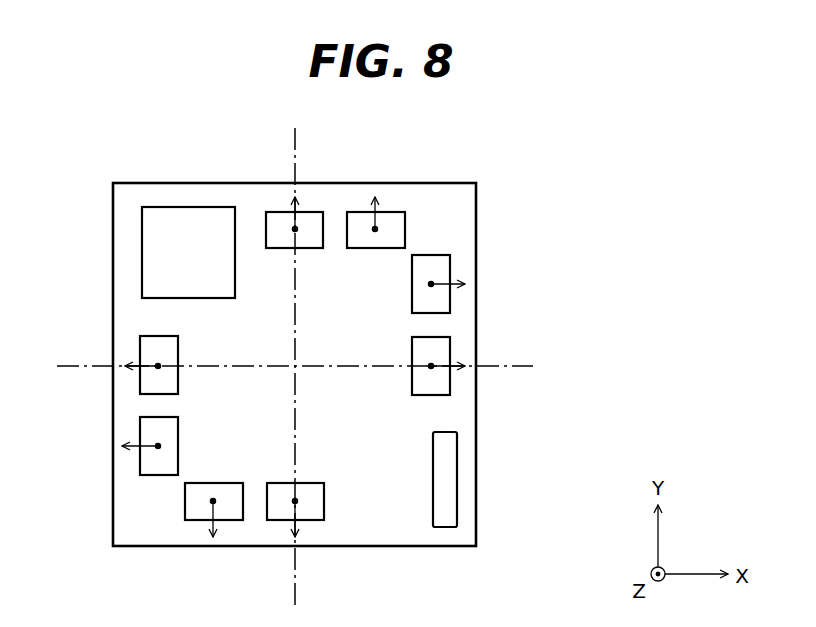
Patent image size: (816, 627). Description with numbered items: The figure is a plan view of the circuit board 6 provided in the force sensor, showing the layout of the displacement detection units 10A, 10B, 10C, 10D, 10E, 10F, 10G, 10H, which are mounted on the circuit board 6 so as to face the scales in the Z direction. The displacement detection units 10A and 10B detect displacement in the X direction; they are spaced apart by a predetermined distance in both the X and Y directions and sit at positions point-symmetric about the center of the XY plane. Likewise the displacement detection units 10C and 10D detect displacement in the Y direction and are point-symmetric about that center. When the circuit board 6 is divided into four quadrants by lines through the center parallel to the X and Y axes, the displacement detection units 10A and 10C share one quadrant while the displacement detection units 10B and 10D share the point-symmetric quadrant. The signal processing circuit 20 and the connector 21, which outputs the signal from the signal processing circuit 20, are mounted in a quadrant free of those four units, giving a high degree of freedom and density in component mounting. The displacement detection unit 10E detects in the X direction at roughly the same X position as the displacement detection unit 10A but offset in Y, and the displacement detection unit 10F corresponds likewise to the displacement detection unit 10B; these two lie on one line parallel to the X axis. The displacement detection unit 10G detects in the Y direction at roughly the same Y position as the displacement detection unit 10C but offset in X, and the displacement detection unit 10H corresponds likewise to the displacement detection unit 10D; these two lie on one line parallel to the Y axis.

The circuit board 6 is at (437, 183).
The signal processing circuit 20 is at (183, 217).
The connector 21 is at (452, 478).
The displacement detection unit 10A is at (450, 298).
The displacement detection unit 10B is at (140, 424).
The displacement detection unit 10C is at (357, 211).
The displacement detection unit 10D is at (190, 521).
The displacement detection unit 10E is at (450, 380).
The displacement detection unit 10F is at (140, 340).
The displacement detection unit 10G is at (280, 211).
The displacement detection unit 10H is at (310, 521).